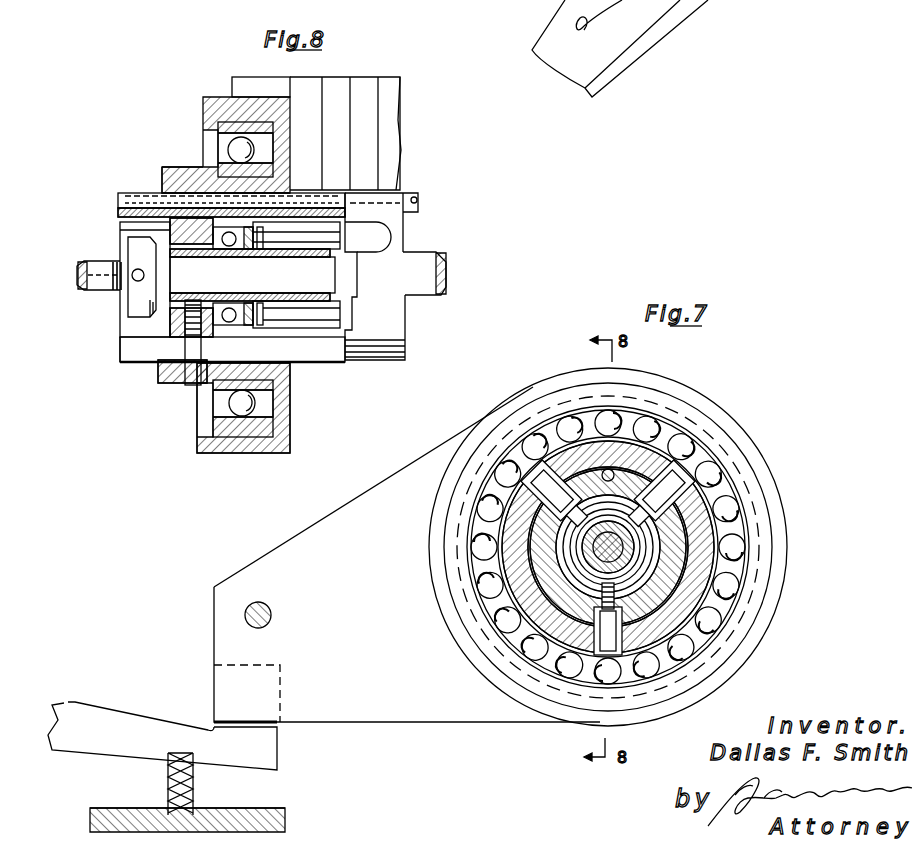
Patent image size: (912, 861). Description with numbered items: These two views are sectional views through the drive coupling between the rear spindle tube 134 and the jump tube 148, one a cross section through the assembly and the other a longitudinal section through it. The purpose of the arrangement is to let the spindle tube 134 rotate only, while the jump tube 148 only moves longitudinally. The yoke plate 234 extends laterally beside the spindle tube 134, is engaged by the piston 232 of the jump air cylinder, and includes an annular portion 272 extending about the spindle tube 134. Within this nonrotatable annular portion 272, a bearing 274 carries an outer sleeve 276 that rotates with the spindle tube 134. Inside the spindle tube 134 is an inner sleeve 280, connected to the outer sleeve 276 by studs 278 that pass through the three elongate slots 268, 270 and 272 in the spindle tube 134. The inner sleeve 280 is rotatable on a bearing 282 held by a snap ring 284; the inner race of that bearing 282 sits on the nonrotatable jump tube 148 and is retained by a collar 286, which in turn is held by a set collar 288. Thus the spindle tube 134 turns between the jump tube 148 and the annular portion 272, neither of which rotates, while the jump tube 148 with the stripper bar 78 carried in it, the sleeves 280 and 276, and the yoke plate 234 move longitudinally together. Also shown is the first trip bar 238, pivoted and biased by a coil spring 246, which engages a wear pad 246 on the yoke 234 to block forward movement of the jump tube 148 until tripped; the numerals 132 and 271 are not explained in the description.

In FIG. 8, the stripper bar 78 is at (432, 263).
In FIG. 7, the stripper bar 78 is at (534, 548).
In FIG. 8, the sleeve 132 is at (116, 202).
In FIG. 8, the rear spindle tube 134 is at (120, 362).
In FIG. 7, the rear spindle tube 134 is at (683, 547).
In FIG. 7, the jump tube 148 is at (544, 563).
In FIG. 7, the piston 232 is at (245, 617).
In FIG. 7, the yoke plate 234 is at (382, 715).
In FIG. 7, the first trip bar 238 is at (105, 714).
In FIG. 7, the coil spring 246 is at (282, 685).
In FIG. 7, the elongate slot 268 is at (557, 457).
In FIG. 8, the elongate slot 270 is at (382, 236).
In FIG. 7, the elongate slot 270 is at (660, 462).
In FIG. 8, the flat bar 271 is at (148, 355).
In FIG. 8, the annular portion 272 is at (248, 97).
In FIG. 7, the annular portion 272 is at (608, 554).
In FIG. 8, the bearing 274 is at (213, 149).
In FIG. 7, the bearing 274 is at (641, 547).
In FIG. 8, the outer sleeve 276 is at (162, 176).
In FIG. 7, the outer sleeve 276 is at (665, 547).
In FIG. 8, the stud 278 is at (186, 386).
In FIG. 7, the stud 278 is at (695, 562).
In FIG. 8, the inner sleeve 280 is at (168, 322).
In FIG. 7, the inner sleeve 280 is at (672, 547).
In FIG. 8, the bearing 282 is at (264, 309).
In FIG. 8, the snap ring 284 is at (264, 322).
In FIG. 8, the collar 286 is at (205, 257).
In FIG. 8, the set collar 288 is at (124, 306).